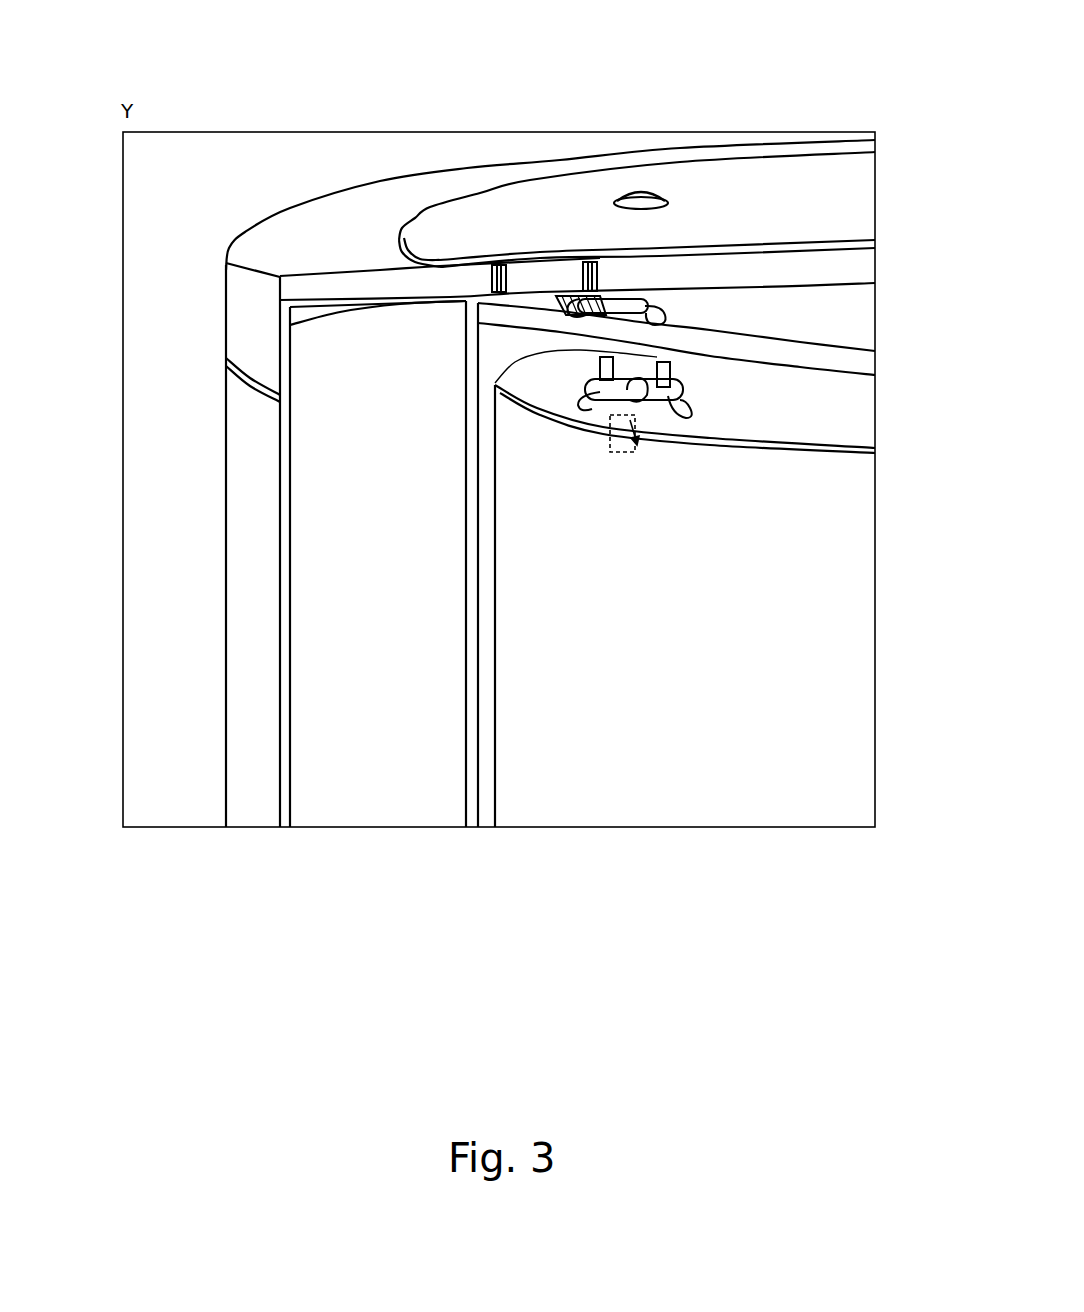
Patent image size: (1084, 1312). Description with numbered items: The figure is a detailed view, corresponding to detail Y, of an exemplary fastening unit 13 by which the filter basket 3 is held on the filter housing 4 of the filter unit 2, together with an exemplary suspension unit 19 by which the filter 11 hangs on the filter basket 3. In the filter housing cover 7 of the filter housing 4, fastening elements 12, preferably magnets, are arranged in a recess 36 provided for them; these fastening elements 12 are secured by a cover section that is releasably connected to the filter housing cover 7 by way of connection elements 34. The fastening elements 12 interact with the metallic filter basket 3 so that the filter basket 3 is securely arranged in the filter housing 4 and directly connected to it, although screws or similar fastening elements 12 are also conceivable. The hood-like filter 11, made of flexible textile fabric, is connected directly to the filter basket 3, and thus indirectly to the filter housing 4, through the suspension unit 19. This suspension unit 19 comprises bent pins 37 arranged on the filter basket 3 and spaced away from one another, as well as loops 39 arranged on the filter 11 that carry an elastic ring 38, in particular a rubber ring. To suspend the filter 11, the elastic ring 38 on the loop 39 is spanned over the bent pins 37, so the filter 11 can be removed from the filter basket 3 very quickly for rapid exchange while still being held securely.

The filter unit 2 is at (285, 75).
The filter basket 3 is at (847, 366).
The filter housing 4 is at (181, 546).
The filter housing cover 7 is at (247, 320).
The filter 11 is at (840, 506).
The fastening elements 12 is at (567, 278).
The fastening unit 13 is at (543, 240).
The suspension unit 19 is at (700, 388).
The connection elements 34 is at (658, 192).
The recess 36 is at (598, 274).
The bent pins 37 is at (507, 380).
The elastic ring 38 is at (652, 297).
The loops 39 is at (623, 455).